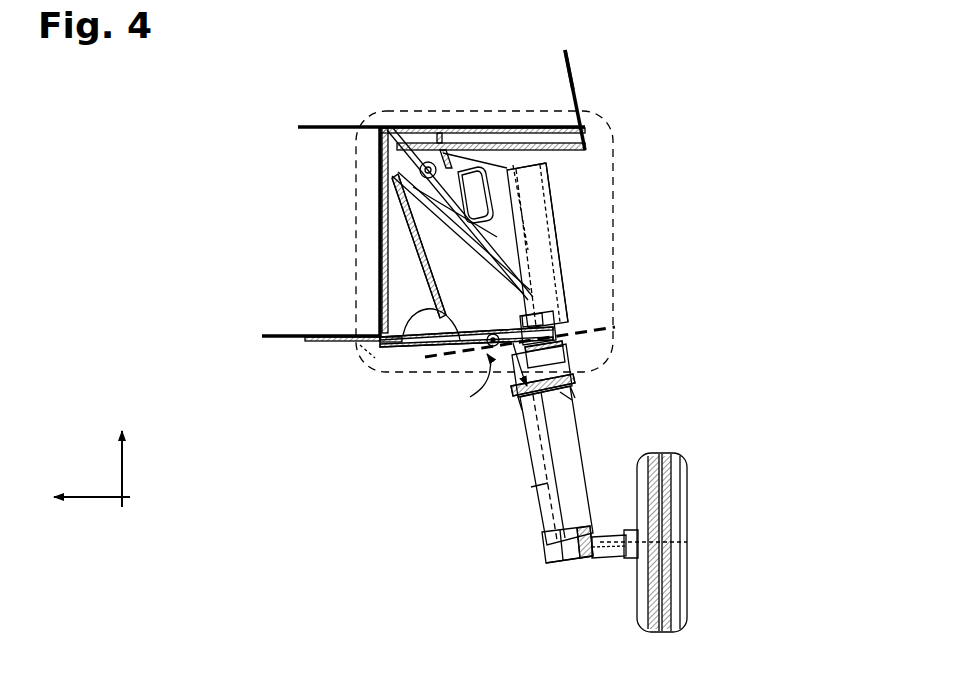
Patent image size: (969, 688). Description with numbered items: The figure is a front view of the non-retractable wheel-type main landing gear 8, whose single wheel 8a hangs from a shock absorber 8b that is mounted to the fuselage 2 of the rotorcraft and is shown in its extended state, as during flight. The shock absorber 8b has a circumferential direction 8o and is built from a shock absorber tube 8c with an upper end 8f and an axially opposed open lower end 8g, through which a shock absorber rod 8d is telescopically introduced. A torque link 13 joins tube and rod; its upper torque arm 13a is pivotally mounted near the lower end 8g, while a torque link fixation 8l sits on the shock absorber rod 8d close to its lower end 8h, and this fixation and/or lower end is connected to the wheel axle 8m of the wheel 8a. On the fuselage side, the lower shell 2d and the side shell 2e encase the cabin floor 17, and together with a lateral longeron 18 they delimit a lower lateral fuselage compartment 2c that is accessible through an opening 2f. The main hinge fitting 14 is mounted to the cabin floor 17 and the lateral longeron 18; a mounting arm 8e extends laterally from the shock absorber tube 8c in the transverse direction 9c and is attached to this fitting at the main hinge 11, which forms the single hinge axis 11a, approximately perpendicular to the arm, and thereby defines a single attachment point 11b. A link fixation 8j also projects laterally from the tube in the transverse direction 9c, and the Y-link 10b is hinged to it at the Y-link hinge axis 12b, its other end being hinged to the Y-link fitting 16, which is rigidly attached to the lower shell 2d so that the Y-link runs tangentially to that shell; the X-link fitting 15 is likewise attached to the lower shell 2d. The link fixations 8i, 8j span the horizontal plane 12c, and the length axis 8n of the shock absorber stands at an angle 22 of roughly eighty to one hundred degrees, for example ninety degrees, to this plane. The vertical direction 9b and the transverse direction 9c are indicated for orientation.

The fuselage 2 is at (557, 95).
The lower lateral fuselage compartment 2c is at (620, 217).
The lower shell 2d is at (280, 342).
The side shell 2e is at (573, 72).
The opening 2f is at (550, 166).
The main landing gear 8 is at (728, 252).
The single wheel 8a is at (678, 498).
The shock absorber 8b is at (563, 207).
The shock absorber tube 8c is at (530, 180).
The shock absorber rod 8d is at (543, 455).
The mounting arm 8e is at (473, 168).
The upper end 8f is at (518, 157).
The lower end 8g is at (578, 403).
The lower end 8h is at (555, 566).
The link fixation 8i is at (558, 347).
The link fixation 8j is at (534, 387).
The torque link fixation 8l is at (553, 545).
The wheel axle 8m is at (603, 547).
The length axis 8n is at (535, 493).
The circumferential direction 8o is at (491, 253).
The vertical direction 9b is at (119, 477).
The transverse direction 9c is at (88, 500).
The Y-link 10b is at (460, 340).
The main hinge 11 is at (426, 166).
The single hinge axis 11a is at (411, 154).
The single attachment point 11b is at (413, 172).
The Y-link hinge axis 12b is at (494, 326).
The horizontal plane 12c is at (626, 321).
The torque link 13 is at (568, 418).
The upper torque arm 13a is at (523, 403).
The main hinge fitting 14 is at (556, 140).
The X-link fitting 15 is at (561, 316).
The Y-link fitting 16 is at (378, 352).
The cabin floor 17 is at (318, 128).
The lateral longeron 18 is at (377, 222).
The angle 22 is at (487, 354).